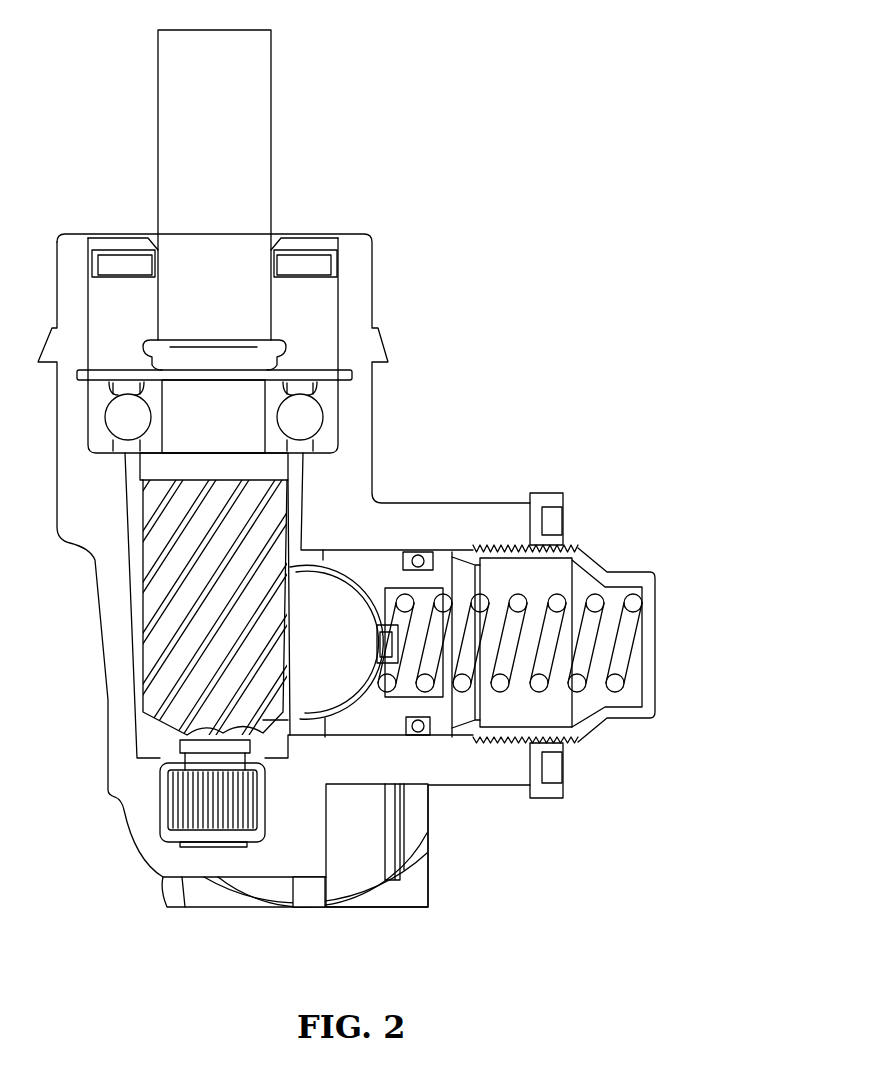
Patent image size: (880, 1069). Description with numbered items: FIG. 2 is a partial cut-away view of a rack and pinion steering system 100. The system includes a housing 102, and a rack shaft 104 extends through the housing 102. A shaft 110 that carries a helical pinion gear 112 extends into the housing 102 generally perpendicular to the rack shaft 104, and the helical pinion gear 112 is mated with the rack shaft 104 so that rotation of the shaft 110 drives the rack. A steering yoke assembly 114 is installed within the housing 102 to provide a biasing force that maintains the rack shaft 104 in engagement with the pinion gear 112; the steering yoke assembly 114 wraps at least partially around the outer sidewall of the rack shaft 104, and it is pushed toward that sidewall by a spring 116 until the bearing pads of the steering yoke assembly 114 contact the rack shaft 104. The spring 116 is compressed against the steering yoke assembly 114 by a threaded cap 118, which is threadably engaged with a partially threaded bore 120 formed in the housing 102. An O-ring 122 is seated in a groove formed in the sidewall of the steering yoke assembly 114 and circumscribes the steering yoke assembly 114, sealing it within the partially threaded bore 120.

The rack and pinion steering system 100 is at (597, 106).
The housing 102 is at (365, 508).
The rack shaft 104 is at (313, 688).
The shaft 110 is at (258, 162).
The helical pinion gear 112 is at (165, 598).
The steering yoke assembly 114 is at (387, 560).
The spring 116 is at (597, 600).
The threaded cap 118 is at (580, 552).
The partially threaded bore 120 is at (578, 740).
The O-ring 122 is at (418, 556).